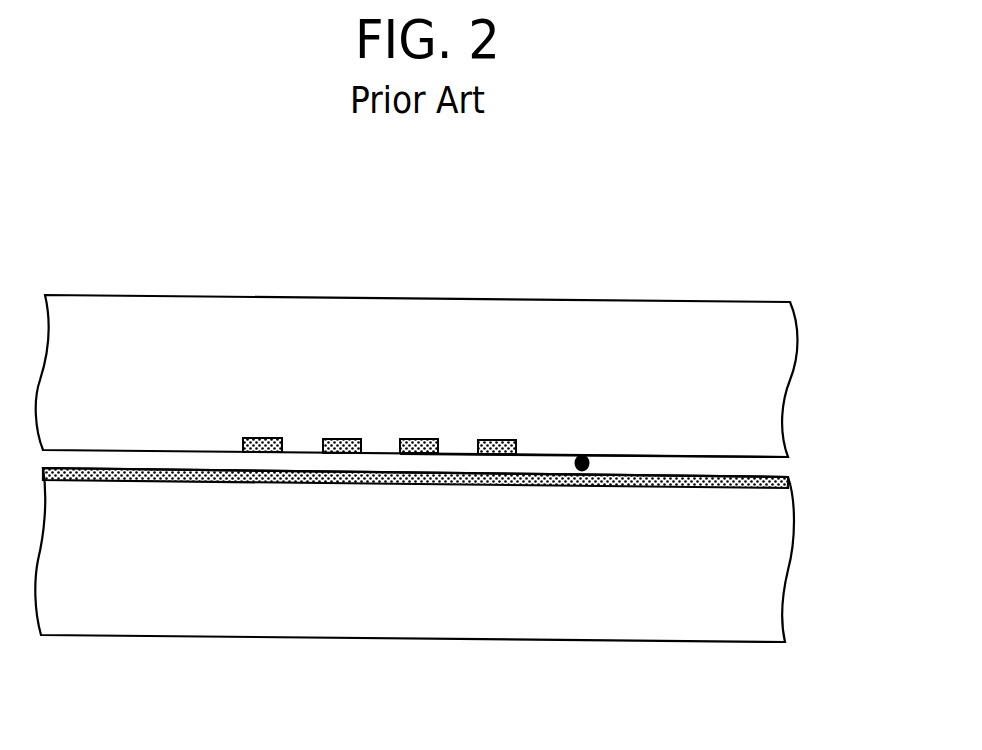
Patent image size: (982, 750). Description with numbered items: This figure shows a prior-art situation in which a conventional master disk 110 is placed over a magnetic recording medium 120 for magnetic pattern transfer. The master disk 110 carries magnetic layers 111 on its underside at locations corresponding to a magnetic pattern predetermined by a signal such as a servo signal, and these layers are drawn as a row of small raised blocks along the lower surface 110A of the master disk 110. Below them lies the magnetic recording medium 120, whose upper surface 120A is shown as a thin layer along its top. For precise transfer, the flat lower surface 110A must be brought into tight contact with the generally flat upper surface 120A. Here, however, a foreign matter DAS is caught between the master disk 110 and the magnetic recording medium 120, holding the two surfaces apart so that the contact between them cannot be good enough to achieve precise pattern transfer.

The master disk 110 is at (646, 301).
The lower surface 110A is at (639, 445).
The magnetic layers 111 is at (497, 440).
The magnetic recording medium 120 is at (719, 637).
The upper surface 120A is at (790, 479).
The foreign matter DAS is at (584, 470).